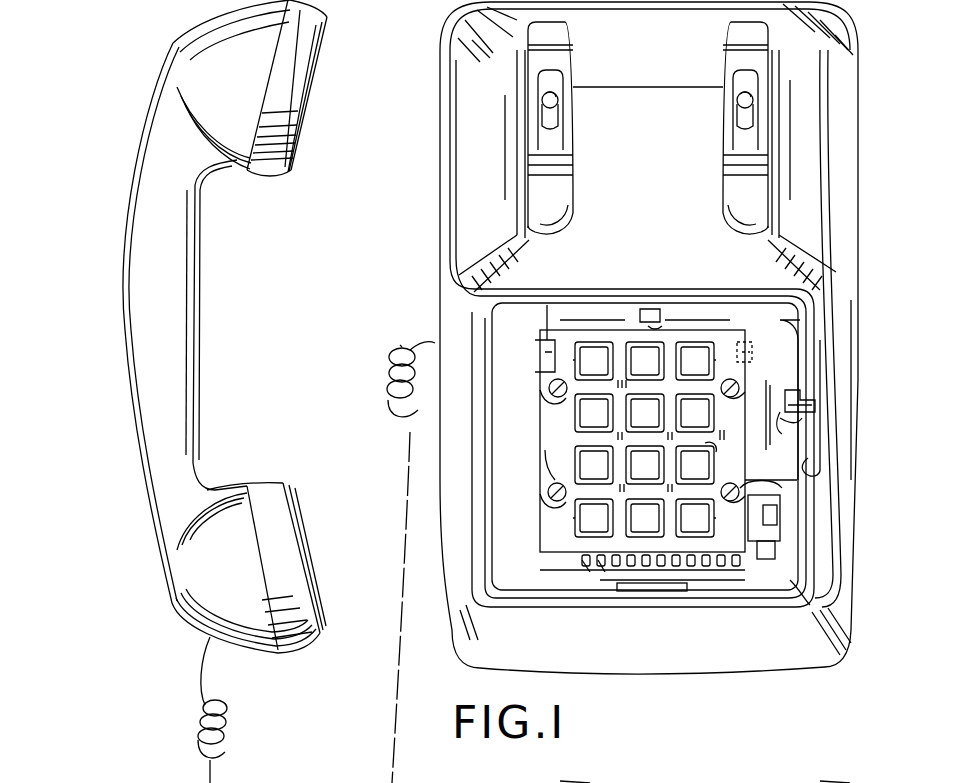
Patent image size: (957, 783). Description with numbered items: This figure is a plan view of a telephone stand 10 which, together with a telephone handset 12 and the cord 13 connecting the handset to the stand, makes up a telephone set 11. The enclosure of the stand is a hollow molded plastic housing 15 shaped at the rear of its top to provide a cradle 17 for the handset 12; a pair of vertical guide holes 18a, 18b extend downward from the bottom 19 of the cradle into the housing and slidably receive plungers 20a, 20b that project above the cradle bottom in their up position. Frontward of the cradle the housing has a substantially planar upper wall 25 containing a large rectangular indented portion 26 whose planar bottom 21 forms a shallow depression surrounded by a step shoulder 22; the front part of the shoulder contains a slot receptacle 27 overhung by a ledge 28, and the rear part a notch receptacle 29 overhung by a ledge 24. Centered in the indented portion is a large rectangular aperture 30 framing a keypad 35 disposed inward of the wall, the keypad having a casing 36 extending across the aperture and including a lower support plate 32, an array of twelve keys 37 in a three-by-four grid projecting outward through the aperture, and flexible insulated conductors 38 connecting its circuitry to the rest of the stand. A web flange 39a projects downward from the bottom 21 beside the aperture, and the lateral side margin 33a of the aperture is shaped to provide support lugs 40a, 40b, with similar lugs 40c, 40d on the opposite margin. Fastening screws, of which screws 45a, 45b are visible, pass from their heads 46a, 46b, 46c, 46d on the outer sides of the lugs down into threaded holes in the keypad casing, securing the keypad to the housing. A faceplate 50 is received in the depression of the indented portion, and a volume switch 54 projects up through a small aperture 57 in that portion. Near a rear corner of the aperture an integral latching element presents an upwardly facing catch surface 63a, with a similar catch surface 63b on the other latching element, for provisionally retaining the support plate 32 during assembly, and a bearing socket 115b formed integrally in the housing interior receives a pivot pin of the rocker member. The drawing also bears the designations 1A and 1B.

The telephone stand 10 is at (872, 140).
The telephone set 11 is at (314, 446).
The telephone handset 12 is at (177, 307).
The cord 13 is at (205, 738).
The housing 15 is at (862, 442).
The cradle 17 is at (530, 95).
The vertical guide hole 18a is at (545, 127).
The vertical guide hole 18b is at (738, 126).
The cradle bottom 19 is at (558, 133).
The plunger 20a is at (560, 98).
The plunger 20b is at (738, 97).
The planar bottom 21 is at (780, 422).
The step shoulder 22 is at (800, 338).
The ledge 24 is at (641, 309).
The upper wall 25 is at (822, 353).
The indented portion 26 is at (750, 480).
The slot receptacle 27 is at (642, 592).
The ledge 28 is at (658, 592).
The notch receptacle 29 is at (660, 320).
The aperture 30 is at (598, 308).
The lower support plate 32 is at (690, 320).
The lateral side margin 33a is at (800, 456).
The keypad 35 is at (705, 444).
The keypad casing 36 is at (740, 560).
The keys 37 is at (578, 558).
The flexible insulated conductors 38 is at (612, 572).
The web flange 39a is at (547, 462).
The support lug 40a is at (548, 390).
The support lug 40b is at (547, 490).
The support lug 40c is at (742, 380).
The support lug 40d is at (768, 498).
The fastening screw 45a is at (590, 774).
The fastening screw 45b is at (844, 774).
The screw head 46a is at (549, 385).
The screw head 46b is at (552, 494).
The screw head 46c is at (740, 386).
The screw head 46d is at (815, 607).
The faceplate 50 is at (510, 340).
The volume switch 54 is at (778, 538).
The small aperture 57 is at (782, 518).
The catch surface 63a is at (547, 305).
The clip 63b is at (747, 342).
The bearing socket 115b is at (802, 398).
The section line 1A is at (569, 362).
The section line 1B is at (727, 362).